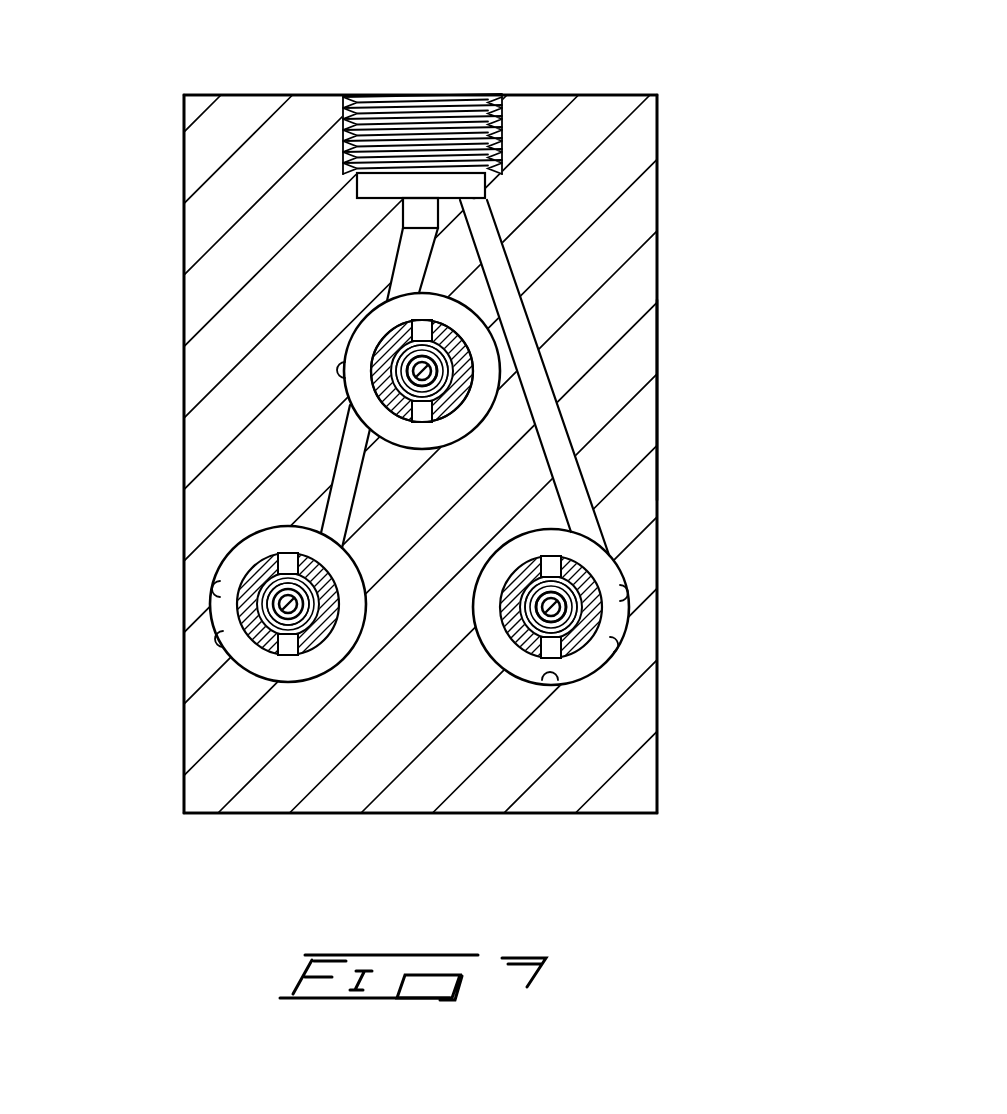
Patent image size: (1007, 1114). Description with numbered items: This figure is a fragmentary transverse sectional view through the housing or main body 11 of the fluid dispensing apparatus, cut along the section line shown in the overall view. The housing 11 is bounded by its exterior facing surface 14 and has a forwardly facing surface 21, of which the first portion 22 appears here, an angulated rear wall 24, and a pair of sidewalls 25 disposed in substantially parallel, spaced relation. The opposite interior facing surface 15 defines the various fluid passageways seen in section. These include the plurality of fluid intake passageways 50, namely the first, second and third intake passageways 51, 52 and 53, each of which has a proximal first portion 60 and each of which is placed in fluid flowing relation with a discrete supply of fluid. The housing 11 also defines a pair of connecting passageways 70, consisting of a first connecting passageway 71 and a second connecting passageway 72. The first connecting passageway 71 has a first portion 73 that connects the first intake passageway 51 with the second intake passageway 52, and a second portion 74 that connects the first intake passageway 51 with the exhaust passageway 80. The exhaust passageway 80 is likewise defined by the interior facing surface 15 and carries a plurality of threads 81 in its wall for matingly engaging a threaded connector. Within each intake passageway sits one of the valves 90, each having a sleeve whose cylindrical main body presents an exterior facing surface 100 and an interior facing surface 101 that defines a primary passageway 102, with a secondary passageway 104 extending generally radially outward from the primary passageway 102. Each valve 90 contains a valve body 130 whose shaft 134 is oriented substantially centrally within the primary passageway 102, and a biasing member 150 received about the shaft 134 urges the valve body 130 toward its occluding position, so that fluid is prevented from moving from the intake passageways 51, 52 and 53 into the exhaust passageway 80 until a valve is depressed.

The housing or main body 11 is at (714, 222).
The exterior facing surface 14 is at (628, 440).
The interior facing surface 15 is at (393, 165).
The forwardly facing surface 21 is at (596, 90).
The first portion 22 is at (248, 93).
The angulated rear wall 24 is at (320, 815).
The sidewalls 25 is at (183, 165).
The fluid intake passageways 50 is at (216, 585).
The first intake passageway 51 is at (360, 378).
The second intake passageway 52 is at (225, 640).
The third intake passageway 53 is at (567, 660).
The first portion 60 is at (385, 318).
The connecting passageways 70 is at (414, 371).
The first connecting passageway 71 is at (398, 246).
The second connecting passageway 72 is at (490, 280).
The first portion 73 is at (348, 460).
The second portion 74 is at (410, 254).
The exhaust passageway 80 is at (466, 130).
The threads 81 is at (385, 150).
The valves 90 is at (492, 366).
The exterior facing surface 100 is at (345, 370).
The interior facing surface 101 is at (290, 604).
The primary passageway 102 is at (493, 655).
The secondary passageway 104 is at (422, 318).
The valve body 130 is at (422, 410).
The shaft 134 is at (283, 622).
The biasing member 150 is at (640, 682).